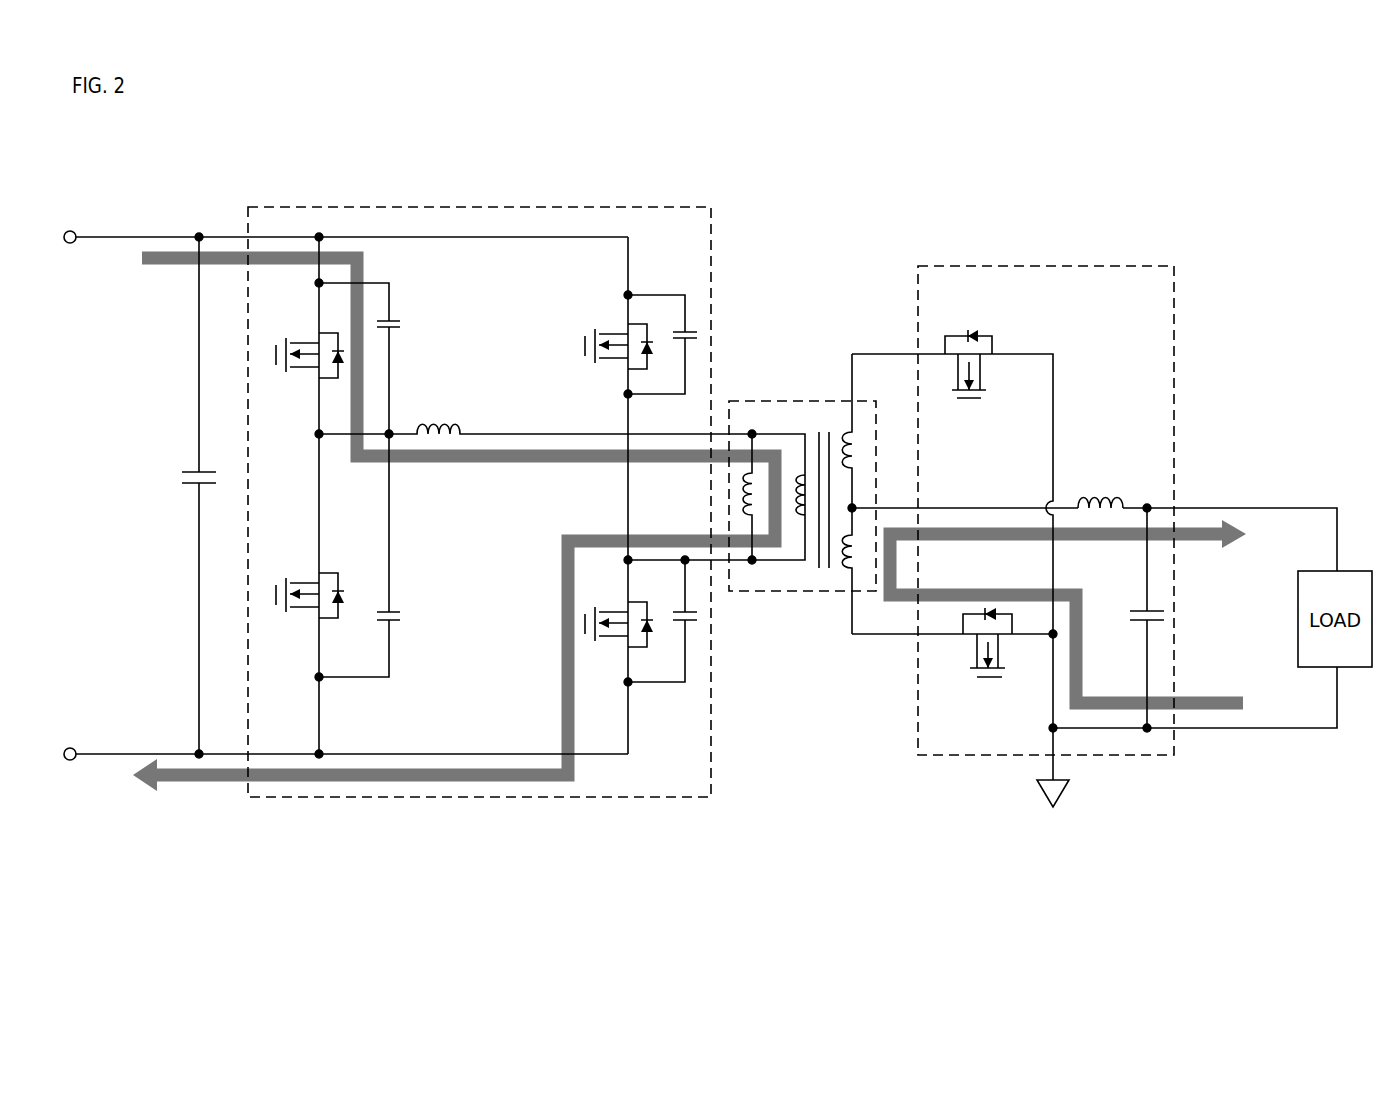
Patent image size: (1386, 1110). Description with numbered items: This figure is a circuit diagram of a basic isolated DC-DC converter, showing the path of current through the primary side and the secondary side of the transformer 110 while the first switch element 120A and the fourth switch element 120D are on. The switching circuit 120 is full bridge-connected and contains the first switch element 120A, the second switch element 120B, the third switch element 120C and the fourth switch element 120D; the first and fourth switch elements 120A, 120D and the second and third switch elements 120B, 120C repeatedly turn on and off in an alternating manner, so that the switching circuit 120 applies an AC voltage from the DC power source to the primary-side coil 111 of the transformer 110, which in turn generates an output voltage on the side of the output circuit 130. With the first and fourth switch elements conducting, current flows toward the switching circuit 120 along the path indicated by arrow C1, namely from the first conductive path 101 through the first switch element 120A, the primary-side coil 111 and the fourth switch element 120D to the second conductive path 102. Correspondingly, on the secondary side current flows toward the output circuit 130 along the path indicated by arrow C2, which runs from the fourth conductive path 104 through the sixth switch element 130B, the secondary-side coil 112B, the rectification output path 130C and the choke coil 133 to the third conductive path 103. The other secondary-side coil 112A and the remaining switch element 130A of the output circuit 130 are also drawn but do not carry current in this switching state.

The first conductive path 101 is at (121, 235).
The second conductive path 102 is at (105, 757).
The third conductive path 103 is at (1205, 505).
The fourth conductive path 104 is at (1210, 730).
The transformer 110 is at (795, 400).
The primary-side coil 111 is at (803, 515).
The secondary-side coil 112A is at (853, 440).
The secondary-side coil 112B is at (854, 565).
The switching circuit 120 is at (463, 207).
The first switch element 120A is at (303, 343).
The second switch element 120B is at (307, 583).
The third switch element 120C is at (610, 334).
The fourth switch element 120D is at (612, 612).
The output circuit 130 is at (1038, 265).
The switch element of output circuit 130A is at (982, 368).
The sixth switch element 130B is at (1000, 657).
The rectification output path 130C is at (965, 505).
The choke coil 133 is at (1095, 493).
The arrow indicating primary-side current path C1 is at (185, 787).
The arrow indicating secondary-side current path C2 is at (1198, 540).